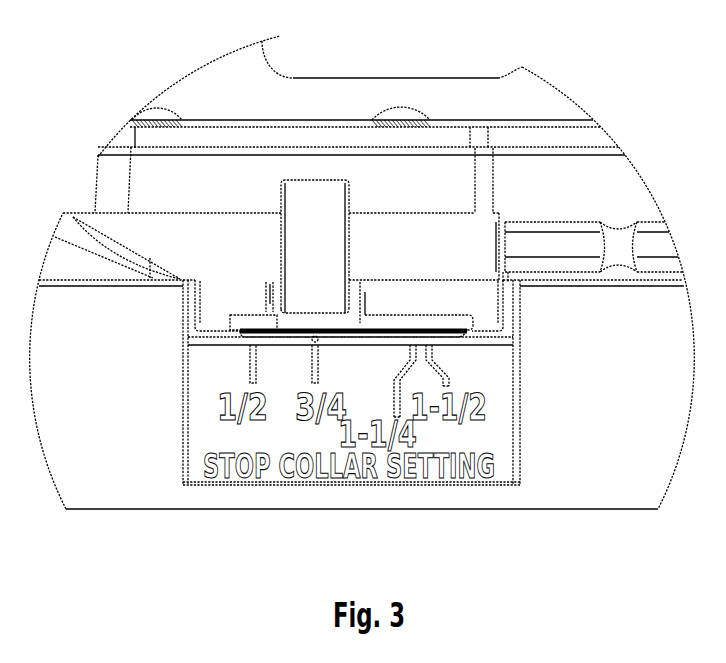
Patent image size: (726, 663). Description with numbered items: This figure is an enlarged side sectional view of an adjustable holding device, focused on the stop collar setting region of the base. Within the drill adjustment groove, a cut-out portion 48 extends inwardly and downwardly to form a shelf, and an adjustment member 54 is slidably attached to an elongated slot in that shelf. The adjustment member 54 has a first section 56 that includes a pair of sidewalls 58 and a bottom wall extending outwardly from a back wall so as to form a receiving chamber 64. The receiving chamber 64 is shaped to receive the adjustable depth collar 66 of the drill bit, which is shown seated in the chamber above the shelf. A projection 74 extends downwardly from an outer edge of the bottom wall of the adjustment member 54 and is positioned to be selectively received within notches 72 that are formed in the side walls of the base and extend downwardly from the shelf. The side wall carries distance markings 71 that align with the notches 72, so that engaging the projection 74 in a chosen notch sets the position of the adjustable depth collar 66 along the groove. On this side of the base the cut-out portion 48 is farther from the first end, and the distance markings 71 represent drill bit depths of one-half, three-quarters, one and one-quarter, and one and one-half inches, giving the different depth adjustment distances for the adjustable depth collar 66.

The cut-out portion 48 is at (505, 318).
The adjustable depth collar 66 is at (330, 224).
The receiving chamber 64 is at (362, 283).
The first section 56 is at (257, 288).
The adjustment member 54 is at (371, 287).
The sidewalls 58 is at (270, 305).
The notches 72 is at (413, 336).
The projection 74 is at (317, 325).
The distance markings 71 is at (400, 398).